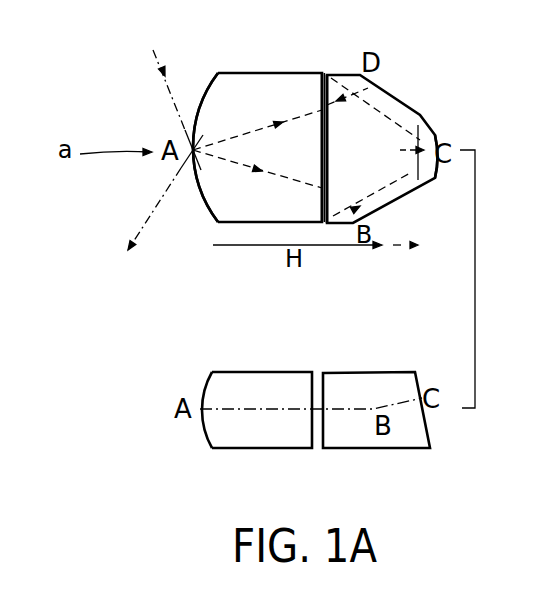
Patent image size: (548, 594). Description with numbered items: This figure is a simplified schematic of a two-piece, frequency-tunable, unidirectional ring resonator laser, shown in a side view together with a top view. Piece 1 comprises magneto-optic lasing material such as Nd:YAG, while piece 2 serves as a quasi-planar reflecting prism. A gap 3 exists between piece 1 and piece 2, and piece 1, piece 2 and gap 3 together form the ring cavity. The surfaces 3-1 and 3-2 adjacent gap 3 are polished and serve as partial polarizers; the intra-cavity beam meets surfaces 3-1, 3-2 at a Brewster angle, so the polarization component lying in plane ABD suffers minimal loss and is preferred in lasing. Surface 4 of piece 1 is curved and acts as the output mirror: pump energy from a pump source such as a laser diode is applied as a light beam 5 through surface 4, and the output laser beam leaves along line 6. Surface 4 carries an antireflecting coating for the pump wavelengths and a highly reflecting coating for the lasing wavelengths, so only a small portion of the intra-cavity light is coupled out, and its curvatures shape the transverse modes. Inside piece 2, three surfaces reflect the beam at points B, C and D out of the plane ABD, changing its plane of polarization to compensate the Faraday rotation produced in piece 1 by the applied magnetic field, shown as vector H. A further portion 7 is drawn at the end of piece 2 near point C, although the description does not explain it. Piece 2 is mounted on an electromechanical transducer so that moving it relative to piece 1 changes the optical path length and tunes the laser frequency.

The piece 1 is at (263, 98).
The piece 2 is at (373, 113).
The gap 3 is at (323, 73).
The surface 3-1 is at (320, 178).
The surface 3-2 is at (328, 172).
The surface 4 is at (213, 79).
The light beam 5 is at (173, 94).
The line 6 is at (157, 209).
The lens portion at exit 7 is at (429, 119).